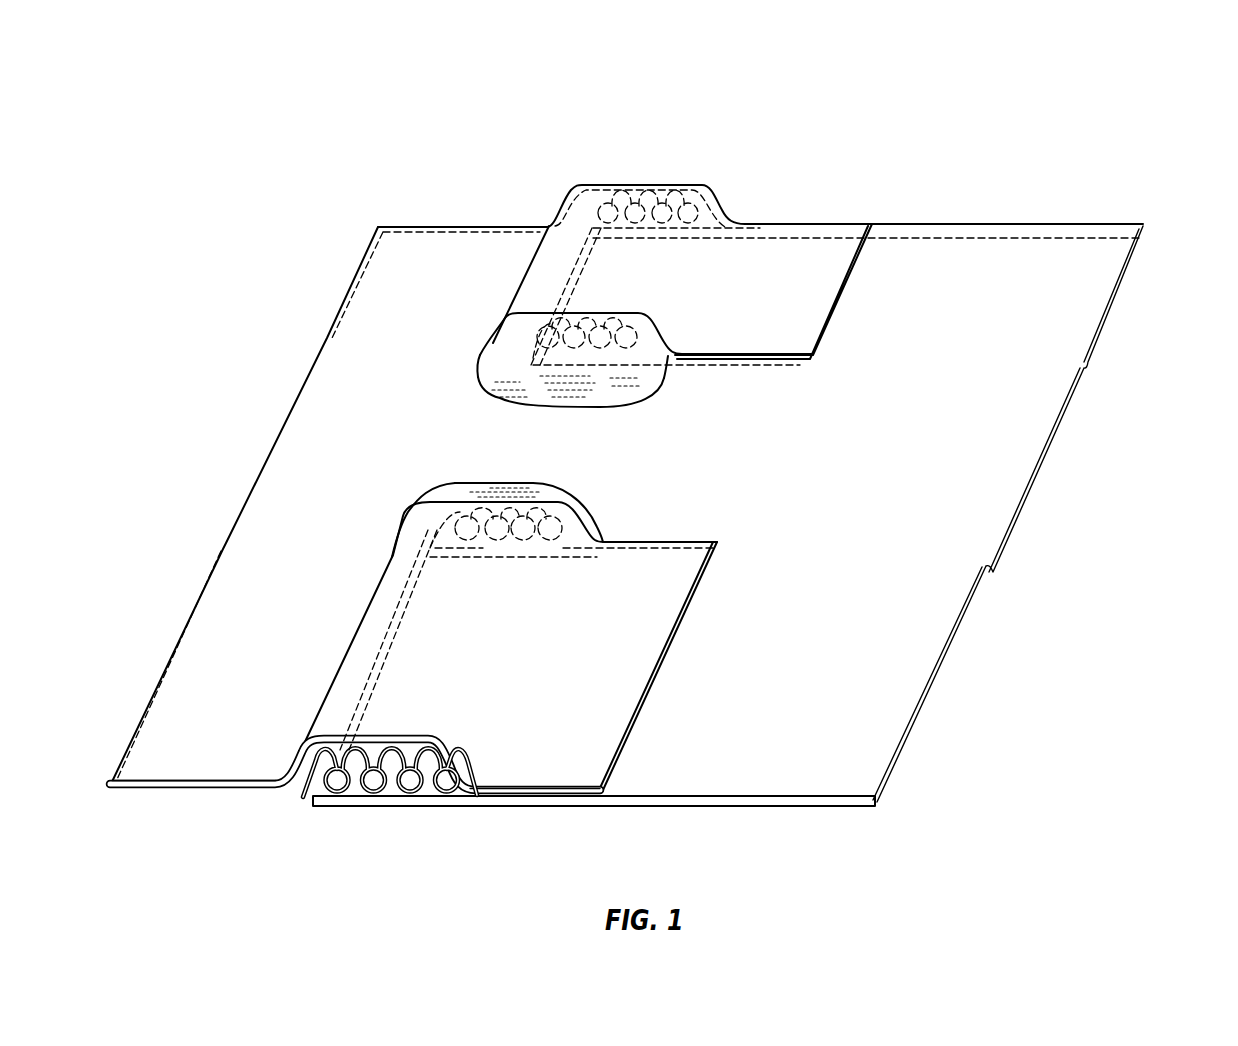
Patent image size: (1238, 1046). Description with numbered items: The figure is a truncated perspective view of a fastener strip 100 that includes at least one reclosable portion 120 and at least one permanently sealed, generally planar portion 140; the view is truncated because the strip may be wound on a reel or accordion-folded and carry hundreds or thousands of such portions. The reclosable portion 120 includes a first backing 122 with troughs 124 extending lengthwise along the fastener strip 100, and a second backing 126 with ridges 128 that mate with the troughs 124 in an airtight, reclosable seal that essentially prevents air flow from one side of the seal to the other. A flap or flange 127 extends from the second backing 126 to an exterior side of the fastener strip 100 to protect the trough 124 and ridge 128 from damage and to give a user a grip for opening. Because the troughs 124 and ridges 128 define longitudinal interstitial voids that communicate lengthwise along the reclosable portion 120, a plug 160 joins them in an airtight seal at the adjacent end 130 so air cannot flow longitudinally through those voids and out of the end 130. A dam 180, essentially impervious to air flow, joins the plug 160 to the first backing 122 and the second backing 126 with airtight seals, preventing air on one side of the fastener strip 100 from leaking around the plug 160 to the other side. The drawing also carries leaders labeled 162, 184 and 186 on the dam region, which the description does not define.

The fastener strip 100 is at (873, 103).
The reclosable portion 120 is at (1165, 229).
The first backing 122 is at (500, 803).
The troughs 124 is at (410, 806).
The second backing 126 is at (250, 785).
The flap or flange 127 is at (562, 792).
The ridges 128 is at (408, 763).
The adjacent end 130 is at (612, 322).
The generally planar portion 140 is at (1093, 385).
The plug 160 is at (597, 337).
The hidden edge 162 is at (530, 552).
The dam 180 is at (540, 397).
The dome side wall 184 is at (662, 370).
The dome nose 186 is at (485, 362).